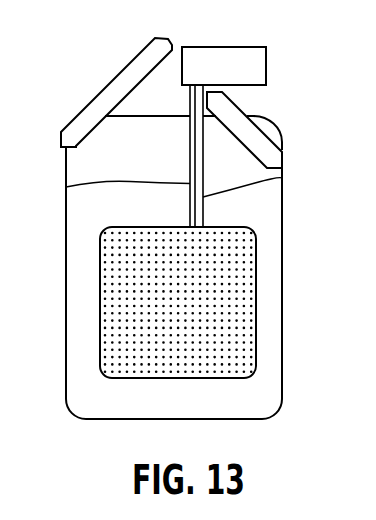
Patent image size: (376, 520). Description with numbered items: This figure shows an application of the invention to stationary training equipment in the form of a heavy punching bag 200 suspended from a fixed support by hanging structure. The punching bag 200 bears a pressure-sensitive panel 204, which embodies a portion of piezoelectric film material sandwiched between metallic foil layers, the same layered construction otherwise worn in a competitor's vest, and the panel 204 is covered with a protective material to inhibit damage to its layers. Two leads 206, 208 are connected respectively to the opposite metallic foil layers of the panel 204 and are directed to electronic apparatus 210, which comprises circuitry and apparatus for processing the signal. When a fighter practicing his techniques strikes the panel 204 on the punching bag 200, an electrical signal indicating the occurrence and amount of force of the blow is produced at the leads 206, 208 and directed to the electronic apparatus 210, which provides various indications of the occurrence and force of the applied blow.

The heavy punching bag 200 is at (272, 288).
The panel 204 is at (243, 260).
The lead 206 is at (268, 182).
The lead 208 is at (66, 187).
The electronic apparatus 210 is at (243, 60).